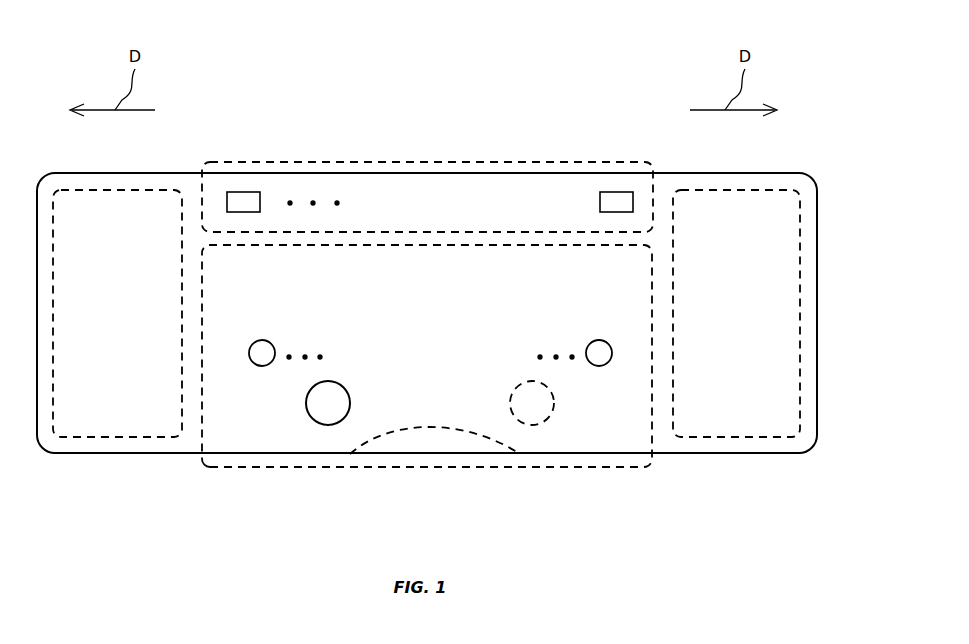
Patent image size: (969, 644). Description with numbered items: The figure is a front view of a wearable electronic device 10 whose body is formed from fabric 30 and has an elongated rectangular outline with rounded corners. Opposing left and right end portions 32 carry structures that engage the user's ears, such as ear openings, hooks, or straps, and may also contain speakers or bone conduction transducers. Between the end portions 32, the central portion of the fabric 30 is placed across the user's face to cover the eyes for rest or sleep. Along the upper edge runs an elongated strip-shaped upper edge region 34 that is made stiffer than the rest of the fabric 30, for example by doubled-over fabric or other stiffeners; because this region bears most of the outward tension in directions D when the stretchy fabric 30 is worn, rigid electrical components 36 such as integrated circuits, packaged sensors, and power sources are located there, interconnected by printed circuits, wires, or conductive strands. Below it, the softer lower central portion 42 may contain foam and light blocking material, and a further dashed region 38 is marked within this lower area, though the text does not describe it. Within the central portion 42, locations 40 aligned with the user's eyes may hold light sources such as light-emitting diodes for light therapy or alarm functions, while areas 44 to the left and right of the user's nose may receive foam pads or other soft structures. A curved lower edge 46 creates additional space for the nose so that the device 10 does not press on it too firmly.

The wearable electronic device 10 is at (797, 122).
The fabric 30 is at (818, 176).
The end portions 32 is at (110, 438).
The upper edge region 34 is at (467, 162).
The electrical components 36 is at (243, 192).
The lower input region 38 is at (620, 446).
The locations 40 is at (262, 366).
The central portion 42 is at (205, 466).
The areas 44 is at (328, 425).
The curved lower edge 46 is at (437, 431).